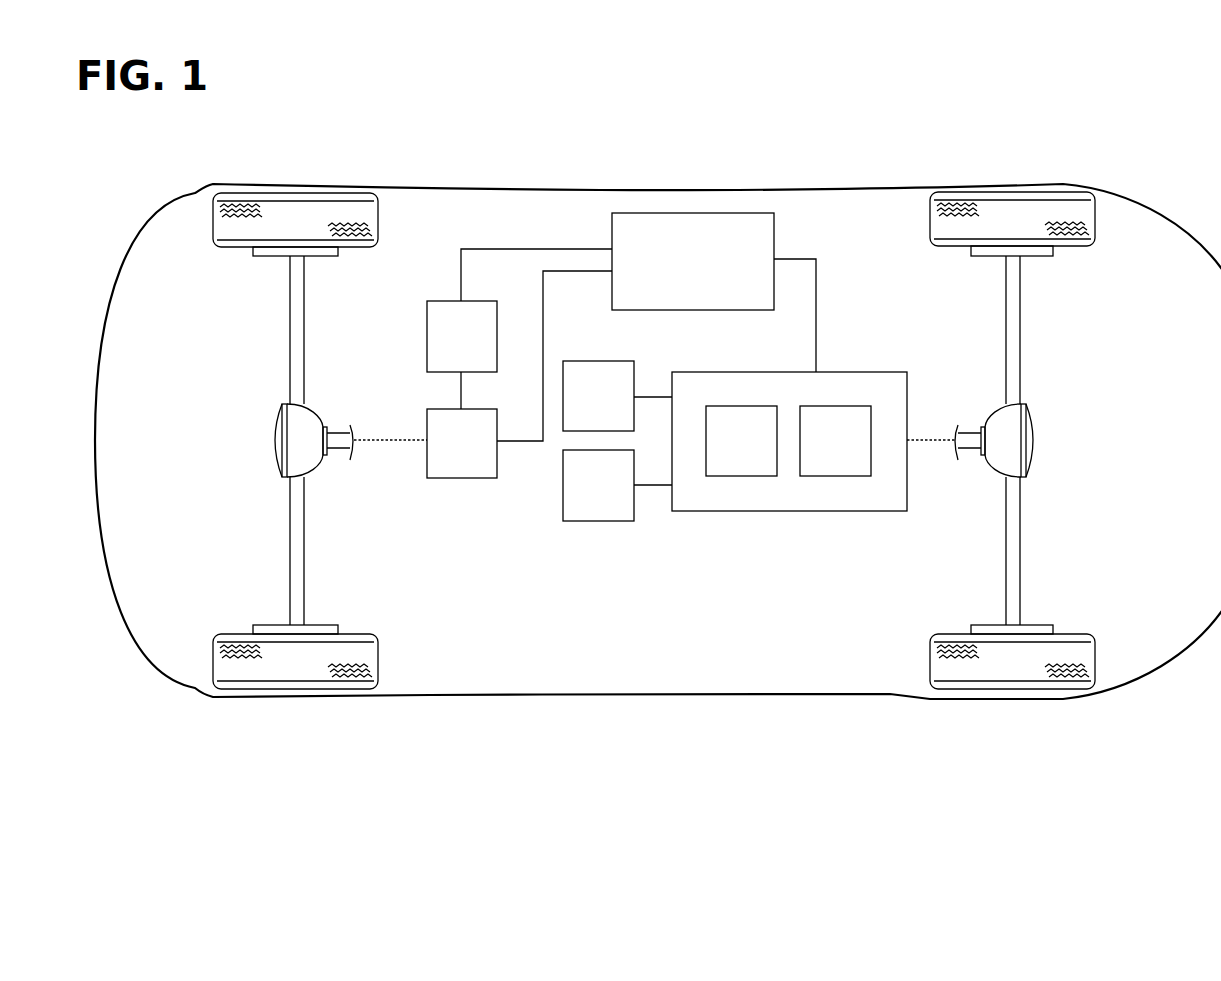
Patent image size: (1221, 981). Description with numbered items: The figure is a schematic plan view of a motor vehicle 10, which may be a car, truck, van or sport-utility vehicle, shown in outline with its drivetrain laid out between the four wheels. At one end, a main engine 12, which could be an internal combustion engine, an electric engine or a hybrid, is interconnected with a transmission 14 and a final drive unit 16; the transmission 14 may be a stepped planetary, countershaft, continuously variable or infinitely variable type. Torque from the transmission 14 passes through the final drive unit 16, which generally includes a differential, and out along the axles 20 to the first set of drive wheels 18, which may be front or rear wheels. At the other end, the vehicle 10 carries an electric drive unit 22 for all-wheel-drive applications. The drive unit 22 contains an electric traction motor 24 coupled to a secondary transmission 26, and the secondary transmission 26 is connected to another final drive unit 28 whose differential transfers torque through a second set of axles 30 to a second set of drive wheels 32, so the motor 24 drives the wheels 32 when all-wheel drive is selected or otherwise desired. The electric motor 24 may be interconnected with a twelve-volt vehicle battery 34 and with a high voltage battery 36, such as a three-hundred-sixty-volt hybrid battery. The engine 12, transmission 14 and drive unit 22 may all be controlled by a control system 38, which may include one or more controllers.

The motor vehicle 10 is at (730, 726).
The main engine 12 is at (451, 346).
The transmission 14 is at (451, 453).
The final drive unit 16 is at (272, 441).
The first set of drive wheels 18 is at (300, 212).
The axles 20 is at (290, 342).
The electric drive unit 22 is at (813, 481).
The electric traction motor 24 is at (731, 450).
The secondary transmission 26 is at (825, 450).
The final drive unit 28 is at (1038, 439).
The second set of axles 30 is at (1021, 339).
The second set of drive wheels 32 is at (1012, 212).
The vehicle battery 34 is at (588, 406).
The high voltage battery 36 is at (588, 495).
The control system 38 is at (683, 271).